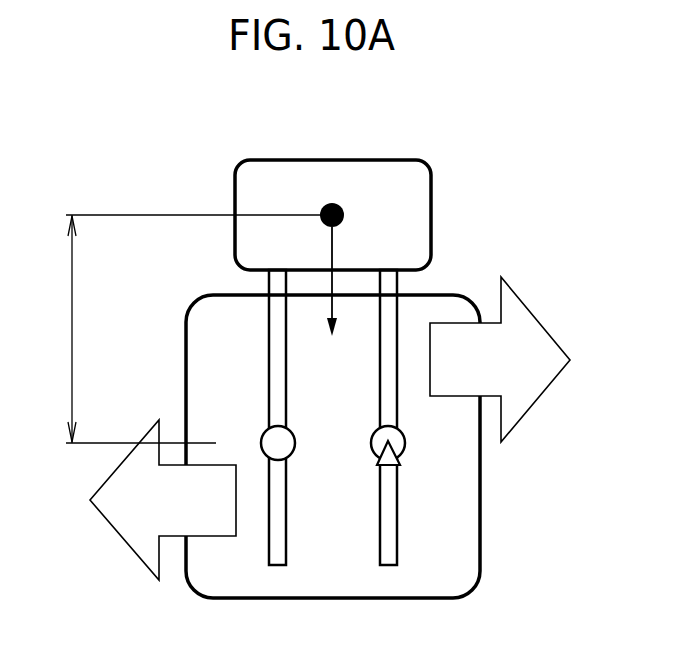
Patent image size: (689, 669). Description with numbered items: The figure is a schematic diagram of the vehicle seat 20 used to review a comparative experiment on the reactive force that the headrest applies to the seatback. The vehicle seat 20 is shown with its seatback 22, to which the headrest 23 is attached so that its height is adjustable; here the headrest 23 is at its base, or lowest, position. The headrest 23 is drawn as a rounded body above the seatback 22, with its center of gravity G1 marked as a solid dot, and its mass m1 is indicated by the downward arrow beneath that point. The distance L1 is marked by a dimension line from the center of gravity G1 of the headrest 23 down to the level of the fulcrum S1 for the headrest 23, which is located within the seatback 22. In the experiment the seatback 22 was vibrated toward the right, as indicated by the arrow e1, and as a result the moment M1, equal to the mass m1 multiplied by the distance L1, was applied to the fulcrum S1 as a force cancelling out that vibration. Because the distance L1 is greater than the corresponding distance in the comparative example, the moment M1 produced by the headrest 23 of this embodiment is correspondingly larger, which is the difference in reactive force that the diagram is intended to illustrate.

The vehicle seat 20 is at (224, 112).
The seatback frame 22 is at (186, 365).
The headrest 23 is at (232, 196).
The center of gravity G1 is at (341, 205).
The mass of the headrest m1 is at (334, 296).
The distance L1 is at (182, 329).
The fulcrum S1 is at (387, 466).
The arrow indicating vibration direction e1 is at (209, 556).
The moment M1 is at (557, 466).